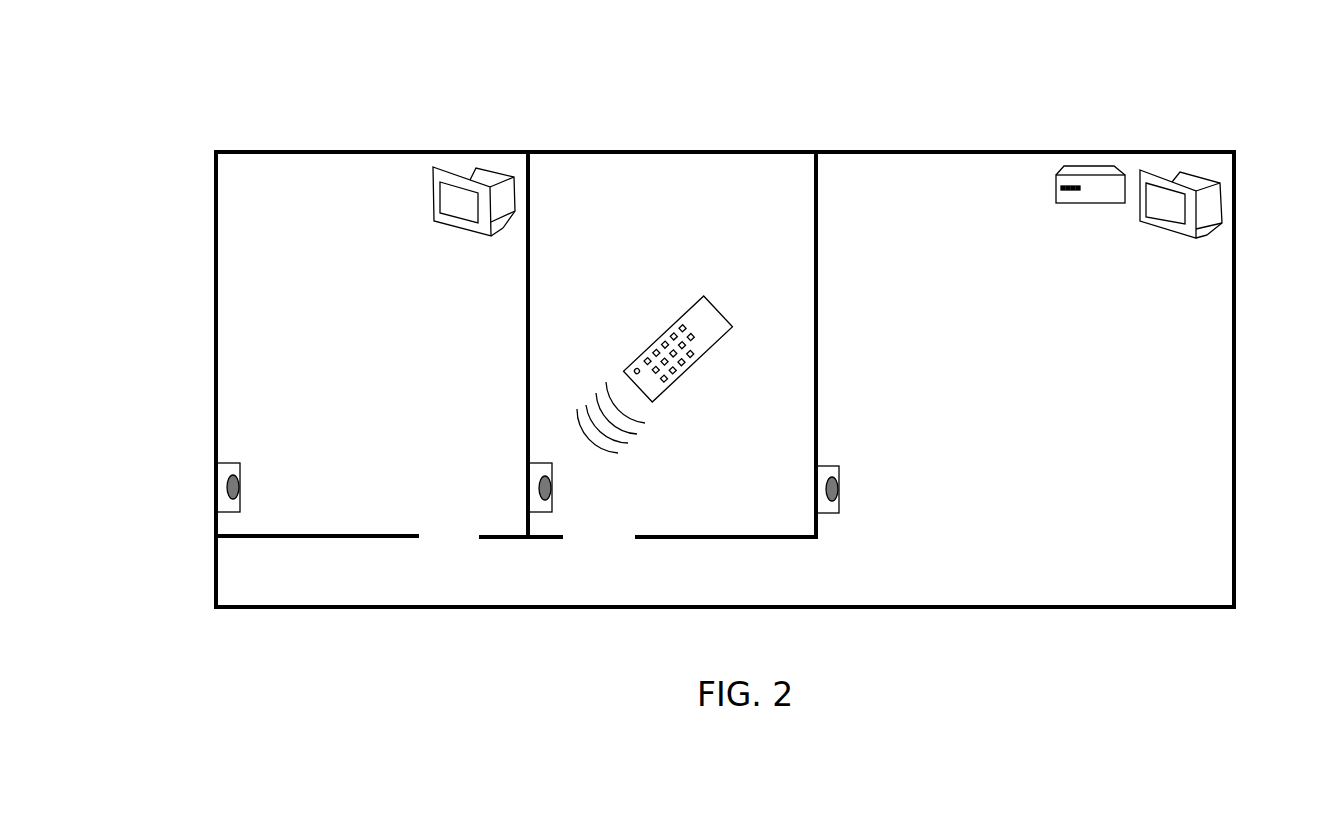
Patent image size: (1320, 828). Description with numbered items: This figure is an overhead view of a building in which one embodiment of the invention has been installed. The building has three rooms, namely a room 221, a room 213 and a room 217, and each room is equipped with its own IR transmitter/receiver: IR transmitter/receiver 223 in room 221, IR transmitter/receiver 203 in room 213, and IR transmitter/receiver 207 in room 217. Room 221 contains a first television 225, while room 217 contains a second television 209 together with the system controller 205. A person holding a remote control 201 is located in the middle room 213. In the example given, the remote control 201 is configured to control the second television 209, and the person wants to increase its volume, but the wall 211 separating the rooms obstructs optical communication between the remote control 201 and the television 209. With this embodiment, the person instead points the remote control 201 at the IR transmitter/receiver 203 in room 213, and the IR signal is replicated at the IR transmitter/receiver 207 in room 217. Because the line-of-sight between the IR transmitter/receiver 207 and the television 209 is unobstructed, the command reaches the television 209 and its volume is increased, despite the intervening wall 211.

The remote control 201 is at (710, 309).
The IR transmitter/receiver 203 is at (542, 483).
The system controller 205 is at (1092, 188).
The IR transmitter/receiver 207 is at (840, 500).
The second television 209 is at (1175, 213).
The wall 211 is at (817, 312).
The room 213 is at (589, 200).
The room 217 is at (868, 187).
The room 221 is at (266, 199).
The IR transmitter/receiver 223 is at (230, 477).
The first television 225 is at (457, 202).